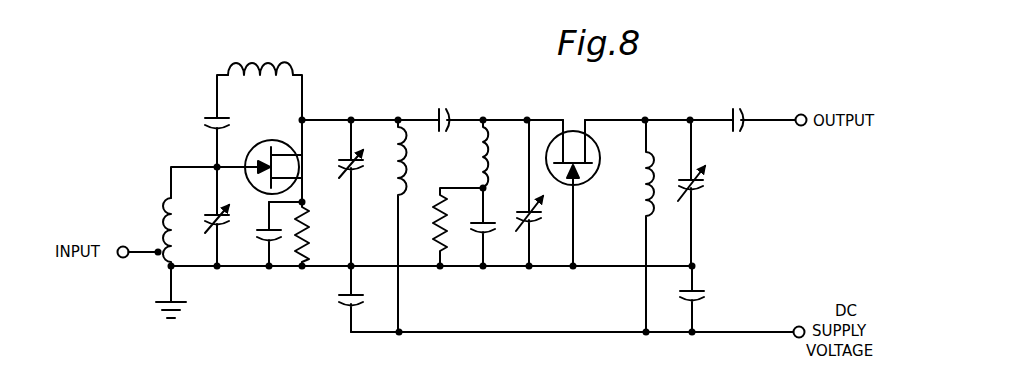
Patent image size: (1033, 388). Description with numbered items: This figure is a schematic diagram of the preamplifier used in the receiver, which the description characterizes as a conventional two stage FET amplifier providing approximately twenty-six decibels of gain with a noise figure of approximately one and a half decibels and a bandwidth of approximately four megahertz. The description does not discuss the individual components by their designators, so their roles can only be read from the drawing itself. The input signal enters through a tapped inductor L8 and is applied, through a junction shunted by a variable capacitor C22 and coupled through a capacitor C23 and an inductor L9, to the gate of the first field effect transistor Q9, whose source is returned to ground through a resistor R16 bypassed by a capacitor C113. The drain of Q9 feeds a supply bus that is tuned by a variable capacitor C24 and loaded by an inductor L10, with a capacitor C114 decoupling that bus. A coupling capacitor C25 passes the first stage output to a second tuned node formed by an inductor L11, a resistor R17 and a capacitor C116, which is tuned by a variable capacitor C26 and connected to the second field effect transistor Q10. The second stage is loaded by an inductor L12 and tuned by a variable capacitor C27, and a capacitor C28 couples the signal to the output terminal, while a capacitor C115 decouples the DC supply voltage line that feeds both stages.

The input inductor L8 is at (150, 232).
The inductor L9 is at (260, 55).
The variable capacitor C22 is at (204, 211).
The capacitor C23 is at (198, 121).
The field effect transistor Q9 is at (259, 155).
The capacitor C113 is at (251, 237).
The resistor R16 is at (321, 234).
The capacitor C114 is at (331, 299).
The variable capacitor C24 is at (338, 193).
The inductor L10 is at (383, 226).
The coupling capacitor C25 is at (445, 108).
The inductor L11 is at (468, 154).
The resistor R17 is at (454, 217).
The capacitor C116 is at (500, 232).
The variable capacitor C26 is at (541, 193).
The field effect transistor Q10 is at (591, 193).
The inductor L12 is at (629, 226).
The variable capacitor C27 is at (711, 193).
The output coupling capacitor C28 is at (740, 108).
The capacitor C115 is at (715, 299).